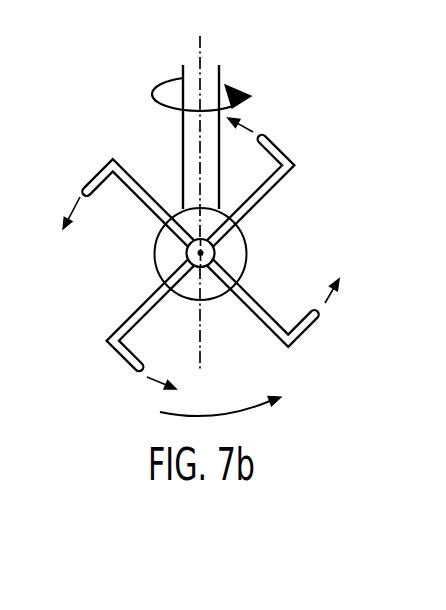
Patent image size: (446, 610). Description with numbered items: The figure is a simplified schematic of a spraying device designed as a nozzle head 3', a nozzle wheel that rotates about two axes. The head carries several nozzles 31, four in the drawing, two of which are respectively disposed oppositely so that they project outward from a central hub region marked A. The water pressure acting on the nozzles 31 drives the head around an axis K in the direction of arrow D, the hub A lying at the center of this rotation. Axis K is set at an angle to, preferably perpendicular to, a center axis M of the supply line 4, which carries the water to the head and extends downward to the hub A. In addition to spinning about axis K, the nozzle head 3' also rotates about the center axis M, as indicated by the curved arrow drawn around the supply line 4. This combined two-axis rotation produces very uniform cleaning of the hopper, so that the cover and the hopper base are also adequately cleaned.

The supply line 4 is at (182, 131).
The nozzle 31 is at (86, 181).
The nozzle head 3' is at (234, 253).
The axis K is at (187, 254).
The hub / axis of rotation A is at (214, 301).
The center axis of supply line M is at (199, 190).
The arrow D is at (220, 399).